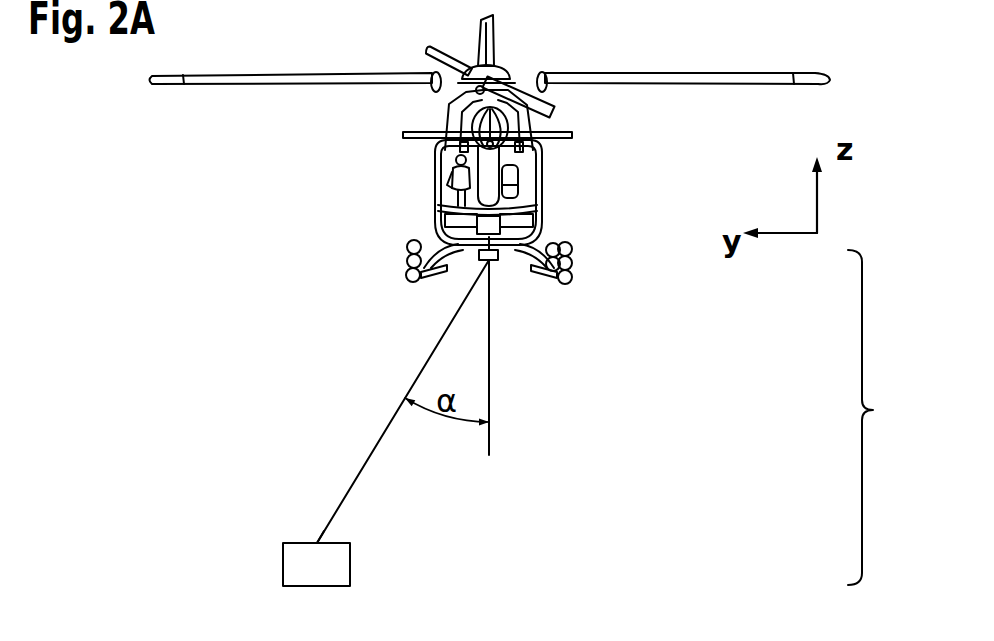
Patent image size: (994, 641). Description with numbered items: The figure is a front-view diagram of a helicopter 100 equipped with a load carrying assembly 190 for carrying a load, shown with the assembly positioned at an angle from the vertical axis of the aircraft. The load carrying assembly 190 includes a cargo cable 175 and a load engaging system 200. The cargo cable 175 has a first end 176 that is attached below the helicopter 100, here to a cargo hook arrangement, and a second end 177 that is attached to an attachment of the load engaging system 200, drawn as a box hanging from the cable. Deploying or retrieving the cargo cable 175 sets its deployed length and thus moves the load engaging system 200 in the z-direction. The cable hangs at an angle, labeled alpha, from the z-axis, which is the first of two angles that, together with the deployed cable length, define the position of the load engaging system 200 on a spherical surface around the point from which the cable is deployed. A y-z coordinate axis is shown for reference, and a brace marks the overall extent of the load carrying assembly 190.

The helicopter 100 is at (392, 176).
The cargo cable 175 is at (434, 348).
The first end 176 is at (505, 272).
The second end 177 is at (307, 530).
The load carrying assembly 190 is at (886, 417).
The load engaging system 200 is at (388, 555).